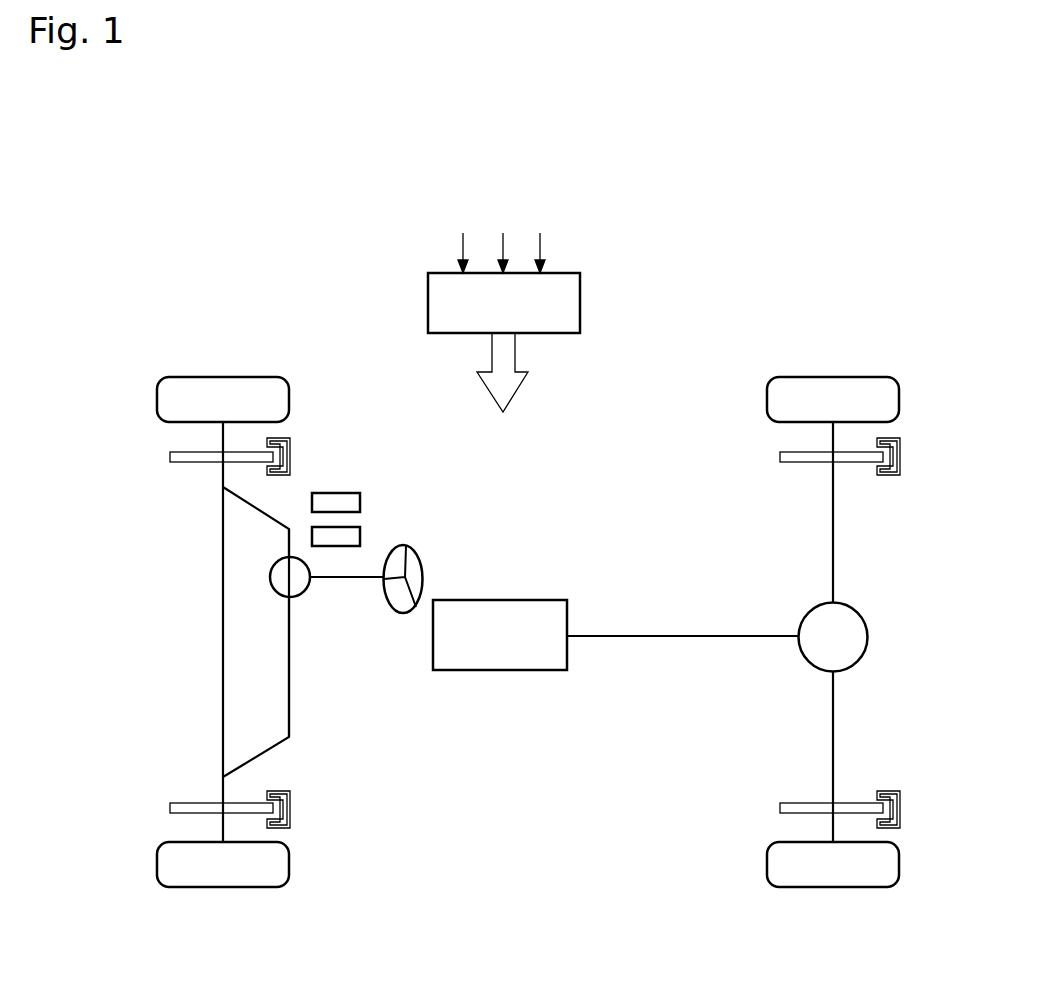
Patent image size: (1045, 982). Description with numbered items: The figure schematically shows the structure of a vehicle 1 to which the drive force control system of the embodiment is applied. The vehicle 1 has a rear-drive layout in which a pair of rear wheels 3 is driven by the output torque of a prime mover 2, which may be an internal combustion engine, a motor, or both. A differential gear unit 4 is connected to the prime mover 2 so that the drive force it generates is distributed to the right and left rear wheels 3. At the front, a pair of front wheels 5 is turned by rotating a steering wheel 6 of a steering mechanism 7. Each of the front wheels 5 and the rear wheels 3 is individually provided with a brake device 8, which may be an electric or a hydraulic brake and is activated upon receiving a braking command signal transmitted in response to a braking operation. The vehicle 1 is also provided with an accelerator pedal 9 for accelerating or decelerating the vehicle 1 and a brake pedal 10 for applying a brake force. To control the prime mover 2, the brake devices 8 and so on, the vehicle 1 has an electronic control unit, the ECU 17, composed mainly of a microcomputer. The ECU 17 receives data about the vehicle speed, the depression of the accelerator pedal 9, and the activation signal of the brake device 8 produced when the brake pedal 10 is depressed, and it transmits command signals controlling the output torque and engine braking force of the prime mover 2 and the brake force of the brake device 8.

The vehicle 1 is at (766, 226).
The prime mover 2 is at (495, 670).
The rear wheels 3 is at (835, 377).
The differential gear unit 4 is at (868, 636).
The front wheels 5 is at (225, 377).
The steering wheel 6 is at (423, 571).
The steering mechanism 7 is at (331, 607).
The brake device 8 is at (290, 456).
The accelerator pedal 9 is at (360, 500).
The brake pedal 10 is at (360, 535).
The electronic control unit (ECU) 17 is at (580, 300).